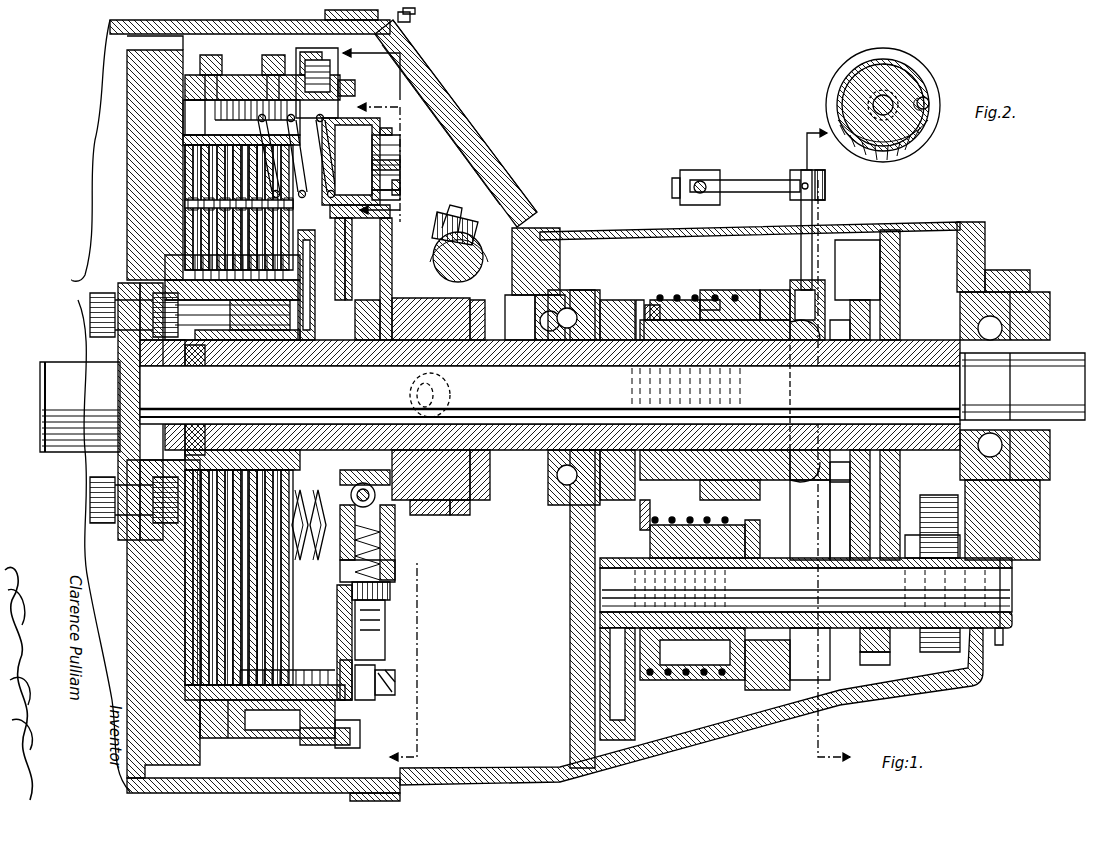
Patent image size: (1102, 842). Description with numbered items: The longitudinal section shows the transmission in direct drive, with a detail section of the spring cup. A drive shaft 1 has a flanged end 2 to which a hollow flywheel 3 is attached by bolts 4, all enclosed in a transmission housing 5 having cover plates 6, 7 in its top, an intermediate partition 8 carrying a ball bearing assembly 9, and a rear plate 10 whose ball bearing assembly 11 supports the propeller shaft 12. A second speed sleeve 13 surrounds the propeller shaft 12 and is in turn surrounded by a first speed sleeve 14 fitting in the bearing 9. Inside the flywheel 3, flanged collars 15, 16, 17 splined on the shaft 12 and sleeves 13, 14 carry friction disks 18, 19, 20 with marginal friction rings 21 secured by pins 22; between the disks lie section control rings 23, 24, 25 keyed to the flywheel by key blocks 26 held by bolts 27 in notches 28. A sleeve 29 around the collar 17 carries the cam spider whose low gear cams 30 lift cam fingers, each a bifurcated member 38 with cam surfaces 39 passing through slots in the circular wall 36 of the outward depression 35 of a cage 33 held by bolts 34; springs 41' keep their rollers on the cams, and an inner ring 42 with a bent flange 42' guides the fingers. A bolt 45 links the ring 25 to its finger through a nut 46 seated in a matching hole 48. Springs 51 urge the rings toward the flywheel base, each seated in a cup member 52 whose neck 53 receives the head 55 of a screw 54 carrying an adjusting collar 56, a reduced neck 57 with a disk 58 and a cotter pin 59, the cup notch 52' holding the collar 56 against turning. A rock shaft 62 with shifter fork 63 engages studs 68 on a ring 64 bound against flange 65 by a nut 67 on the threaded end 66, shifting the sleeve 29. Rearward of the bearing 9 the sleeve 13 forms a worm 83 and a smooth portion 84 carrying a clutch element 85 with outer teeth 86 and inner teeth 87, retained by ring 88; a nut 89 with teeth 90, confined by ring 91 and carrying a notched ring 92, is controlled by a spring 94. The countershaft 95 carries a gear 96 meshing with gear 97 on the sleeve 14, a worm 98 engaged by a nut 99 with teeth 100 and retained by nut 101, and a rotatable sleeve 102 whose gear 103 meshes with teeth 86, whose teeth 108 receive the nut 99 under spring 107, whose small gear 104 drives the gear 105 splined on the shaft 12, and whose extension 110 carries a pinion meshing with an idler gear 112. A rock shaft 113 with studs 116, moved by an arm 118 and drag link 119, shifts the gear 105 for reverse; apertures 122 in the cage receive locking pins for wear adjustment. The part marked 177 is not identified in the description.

In FIG. 1, the drive shaft 1 is at (40, 374).
In FIG. 1, the flange 2 is at (85, 270).
In FIG. 1, the hollow flywheel 3 is at (125, 125).
In FIG. 1, the bolts 4 is at (90, 312).
In FIG. 1, the transmission housing 5 is at (110, 58).
In FIG. 1, the cover plate 6 is at (478, 130).
In FIG. 1, the cover plate 7 is at (630, 232).
In FIG. 1, the intermediate partition 8 is at (570, 678).
In FIG. 1, the ball bearing assembly 9 is at (548, 483).
In FIG. 1, the end plate 10 is at (975, 275).
In FIG. 1, the ball bearing assembly 11 is at (970, 330).
In FIG. 1, the propeller shaft 12 is at (612, 388).
In FIG. 1, the second speed sleeve 13 is at (480, 452).
In FIG. 1, the first speed sleeve 14 is at (512, 340).
In FIG. 1, the flanged collar 15 is at (185, 372).
In FIG. 1, the flanged collar 16 is at (245, 305).
In FIG. 1, the flanged collar 17 is at (235, 330).
In FIG. 1, the friction disk 18 is at (190, 272).
In FIG. 1, the friction disk 19 is at (235, 300).
In FIG. 1, the friction disk 20 is at (270, 262).
In FIG. 1, the marginal friction rings 21 is at (190, 172).
In FIG. 1, the pins 22 is at (188, 202).
In FIG. 1, the section control ring 23 is at (220, 138).
In FIG. 1, the section control ring 24 is at (215, 118).
In FIG. 1, the section control ring 25 is at (282, 108).
In FIG. 1, the key blocks 26 is at (236, 85).
In FIG. 1, the bolts 27 is at (212, 56).
In FIG. 1, the notches 28 is at (312, 62).
In FIG. 1, the sleeve 29 is at (358, 340).
In FIG. 1, the cams 30 is at (303, 562).
In FIG. 1, the cover plate 33 is at (340, 630).
In FIG. 1, the bolts 34 is at (355, 88).
In FIG. 1, the outward depression 35 is at (385, 259).
In FIG. 1, the circular wall 36 is at (390, 602).
In FIG. 1, the bifurcated member 38 is at (385, 630).
In FIG. 1, the cam surfaces 39 is at (385, 672).
In FIG. 1, the springs 41' is at (399, 554).
In FIG. 1, the inner ring 42 is at (314, 285).
In FIG. 1, the flange 42' is at (359, 259).
In FIG. 1, the bolt 45 is at (350, 700).
In FIG. 1, the nut 46 is at (312, 672).
In FIG. 1, the hole 48 is at (300, 738).
In FIG. 1, the springs 51 is at (306, 197).
In FIG. 2, the cup member 52 is at (873, 105).
In FIG. 1, the cup member 52 is at (441, 125).
In FIG. 2, the notch 52' is at (944, 84).
In FIG. 1, the neck 53 is at (400, 143).
In FIG. 2, the screw 54 is at (873, 104).
In FIG. 1, the screw 54 is at (400, 196).
In FIG. 1, the head 55 is at (400, 165).
In FIG. 1, the collar 56 is at (348, 220).
In FIG. 1, the reduced neck 57 is at (440, 152).
In FIG. 2, the disk 58 is at (895, 80).
In FIG. 1, the disk 58 is at (400, 140).
In FIG. 1, the cotter pin 59 is at (400, 187).
In FIG. 1, the rock shaft 62 is at (483, 265).
In FIG. 1, the shifter fork 63 is at (462, 278).
In FIG. 1, the ring 64 is at (425, 516).
In FIG. 1, the flange 65 is at (410, 512).
In FIG. 1, the threaded end 66 is at (475, 490).
In FIG. 1, the nut 67 is at (468, 515).
In FIG. 1, the studs 68 is at (452, 395).
In FIG. 1, the worm 83 is at (665, 350).
In FIG. 1, the smooth portion 84 is at (795, 300).
In FIG. 1, the clutch element 85 is at (760, 290).
In FIG. 1, the outer gear teeth 86 is at (760, 292).
In FIG. 1, the inner gear teeth 87 is at (712, 296).
In FIG. 1, the ring 88 is at (790, 360).
In FIG. 1, the nut 89 is at (680, 296).
In FIG. 1, the external gear teeth 90 is at (668, 295).
In FIG. 1, the ring 91 is at (640, 305).
In FIG. 1, the ring 92 is at (652, 300).
In FIG. 1, the spring 94 is at (704, 285).
In FIG. 1, the countershaft 95 is at (806, 601).
In FIG. 1, the gear 96 is at (635, 720).
In FIG. 1, the gear 97 is at (605, 320).
In FIG. 1, the worm 98 is at (708, 680).
In FIG. 1, the clutch nut 99 is at (670, 518).
In FIG. 1, the outer gear teeth 100 is at (648, 518).
In FIG. 1, the nut 101 is at (742, 690).
In FIG. 1, the sleeve 102 is at (800, 632).
In FIG. 1, the gear 103 is at (765, 533).
In FIG. 1, the small gear 104 is at (872, 661).
In FIG. 1, the gear 105 is at (875, 292).
In FIG. 1, the spring 107 is at (712, 518).
In FIG. 1, the teeth 108 is at (698, 680).
In FIG. 1, the sleeve extension 110 is at (905, 558).
In FIG. 1, the idler gear 112 is at (938, 495).
In FIG. 1, the rock shaft 113 is at (812, 240).
In FIG. 1, the studs 116 is at (850, 328).
In FIG. 1, the arm 118 is at (745, 181).
In FIG. 1, the drag link 119 is at (698, 180).
In FIG. 1, the aperture 122 is at (376, 497).
In FIG. 1, the cavity 177 is at (840, 485).